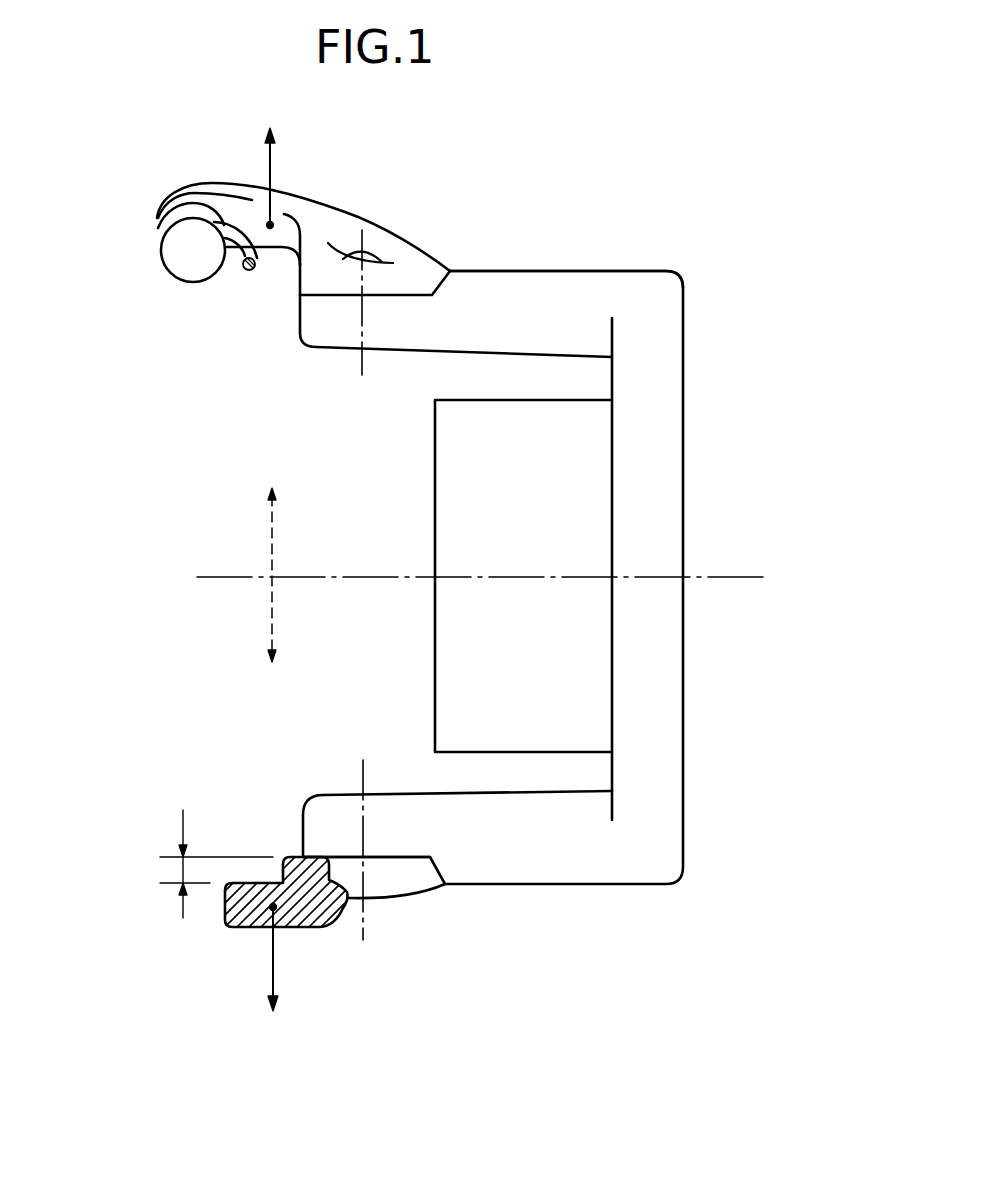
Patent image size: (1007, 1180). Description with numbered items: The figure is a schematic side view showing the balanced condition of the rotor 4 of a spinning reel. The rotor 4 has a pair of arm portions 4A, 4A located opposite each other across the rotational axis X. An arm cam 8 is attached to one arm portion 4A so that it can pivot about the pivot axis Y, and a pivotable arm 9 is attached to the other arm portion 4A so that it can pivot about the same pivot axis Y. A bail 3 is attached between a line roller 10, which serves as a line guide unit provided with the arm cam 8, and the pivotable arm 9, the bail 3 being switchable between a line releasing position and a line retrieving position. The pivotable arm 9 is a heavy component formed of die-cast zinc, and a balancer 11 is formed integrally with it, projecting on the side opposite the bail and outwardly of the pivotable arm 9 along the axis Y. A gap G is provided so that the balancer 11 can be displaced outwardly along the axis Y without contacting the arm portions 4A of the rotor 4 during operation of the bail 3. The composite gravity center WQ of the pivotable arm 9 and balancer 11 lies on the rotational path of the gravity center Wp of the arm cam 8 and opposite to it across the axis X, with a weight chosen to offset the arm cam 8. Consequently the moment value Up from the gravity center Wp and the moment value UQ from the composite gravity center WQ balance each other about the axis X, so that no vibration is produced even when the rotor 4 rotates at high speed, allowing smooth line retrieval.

The bail 3 is at (246, 265).
The rotor 4 is at (685, 348).
The arm portion 4A is at (607, 268).
The arm cam 8 is at (417, 258).
The pivotable arm 9 is at (398, 887).
The line roller 10 is at (159, 222).
The balancer 11 is at (226, 922).
The gap G is at (182, 868).
The gravity center of the arm cam Wp is at (272, 222).
The composite gravity center of the pivotable arm and balancer WQ is at (275, 909).
The moment value Up is at (278, 553).
The moment value UQ is at (280, 682).
The rotational axis X is at (468, 578).
The pivot axis Y is at (361, 585).